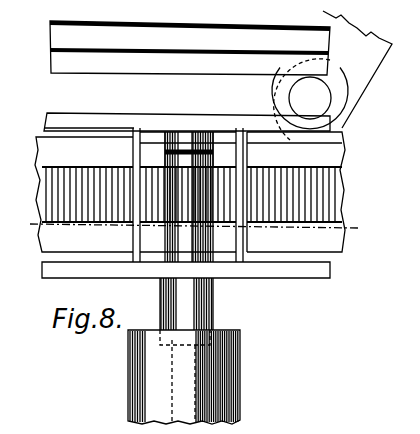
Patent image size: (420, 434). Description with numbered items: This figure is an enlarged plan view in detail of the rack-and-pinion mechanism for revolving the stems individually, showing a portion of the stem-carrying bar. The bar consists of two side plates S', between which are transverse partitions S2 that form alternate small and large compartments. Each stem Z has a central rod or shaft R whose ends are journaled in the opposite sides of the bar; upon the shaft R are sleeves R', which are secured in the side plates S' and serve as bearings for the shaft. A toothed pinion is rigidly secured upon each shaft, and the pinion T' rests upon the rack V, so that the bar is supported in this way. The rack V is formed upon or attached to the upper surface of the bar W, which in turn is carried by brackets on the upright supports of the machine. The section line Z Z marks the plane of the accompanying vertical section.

The sleeve R' is at (276, 170).
The side plate S' is at (203, 206).
The transverse partition S2 is at (132, 158).
The cross piece T' is at (200, 151).
The rack V is at (343, 190).
The bar W is at (338, 252).
The stem Z is at (194, 319).
The shaft R is at (184, 377).